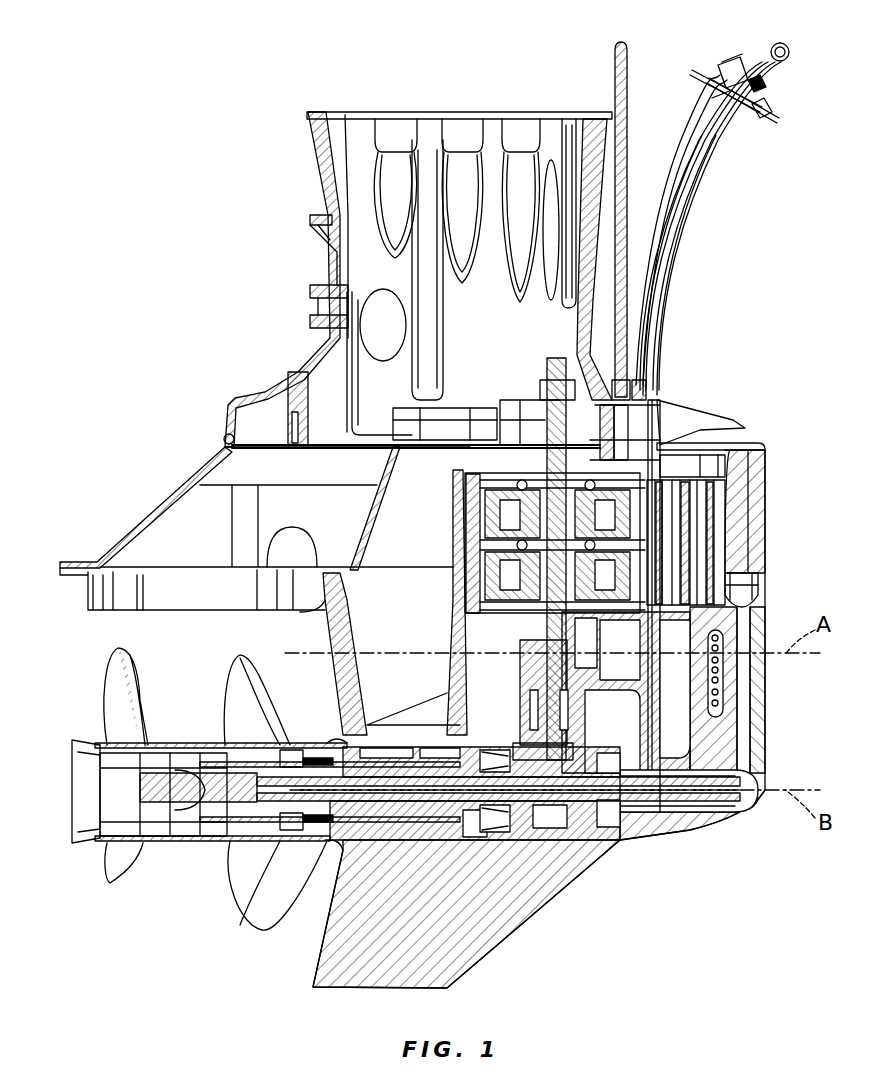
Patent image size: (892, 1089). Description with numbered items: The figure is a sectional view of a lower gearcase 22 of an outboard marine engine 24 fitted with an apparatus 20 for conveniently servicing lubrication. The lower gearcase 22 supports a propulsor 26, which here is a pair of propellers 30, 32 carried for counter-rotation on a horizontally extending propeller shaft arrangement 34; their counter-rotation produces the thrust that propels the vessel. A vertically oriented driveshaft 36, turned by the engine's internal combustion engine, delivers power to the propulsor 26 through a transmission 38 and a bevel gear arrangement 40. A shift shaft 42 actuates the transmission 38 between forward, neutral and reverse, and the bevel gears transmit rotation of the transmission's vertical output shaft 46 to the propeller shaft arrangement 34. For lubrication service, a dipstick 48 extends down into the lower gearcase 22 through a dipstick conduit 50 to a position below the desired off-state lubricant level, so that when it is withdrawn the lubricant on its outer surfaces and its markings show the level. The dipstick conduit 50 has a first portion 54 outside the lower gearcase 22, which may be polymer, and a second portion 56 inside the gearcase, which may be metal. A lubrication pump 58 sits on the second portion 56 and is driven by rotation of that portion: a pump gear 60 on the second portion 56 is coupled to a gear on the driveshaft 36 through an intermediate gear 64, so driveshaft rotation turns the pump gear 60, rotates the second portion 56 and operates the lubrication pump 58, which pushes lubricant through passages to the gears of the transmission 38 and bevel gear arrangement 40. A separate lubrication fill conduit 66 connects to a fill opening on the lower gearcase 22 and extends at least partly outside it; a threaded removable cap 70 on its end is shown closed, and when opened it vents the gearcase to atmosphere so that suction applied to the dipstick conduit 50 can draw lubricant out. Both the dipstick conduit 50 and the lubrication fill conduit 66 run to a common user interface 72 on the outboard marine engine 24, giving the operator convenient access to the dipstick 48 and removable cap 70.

The apparatus 20 is at (683, 308).
The lower gearcase 22 is at (767, 768).
The outboard marine engine 24 is at (255, 268).
The propulsor 26 is at (195, 905).
The propeller 30 is at (78, 840).
The propeller 32 is at (238, 845).
The propeller shaft arrangement 34 is at (302, 745).
The driveshaft 36 is at (548, 382).
The transmission 38 is at (474, 544).
The bevel gear arrangement 40 is at (565, 828).
The shift shaft 42 is at (613, 56).
The output shaft 46 is at (547, 686).
The dipstick 48 is at (782, 82).
The dipstick conduit 50 is at (718, 197).
The first portion 54 is at (685, 256).
The second portion 56 is at (660, 485).
The lubrication pump 58 is at (664, 616).
The pump gear 60 is at (650, 470).
The intermediate gear 64 is at (632, 452).
The lubrication fill conduit 66 is at (686, 128).
The removable cap 70 is at (724, 62).
The common user interface 72 is at (784, 114).